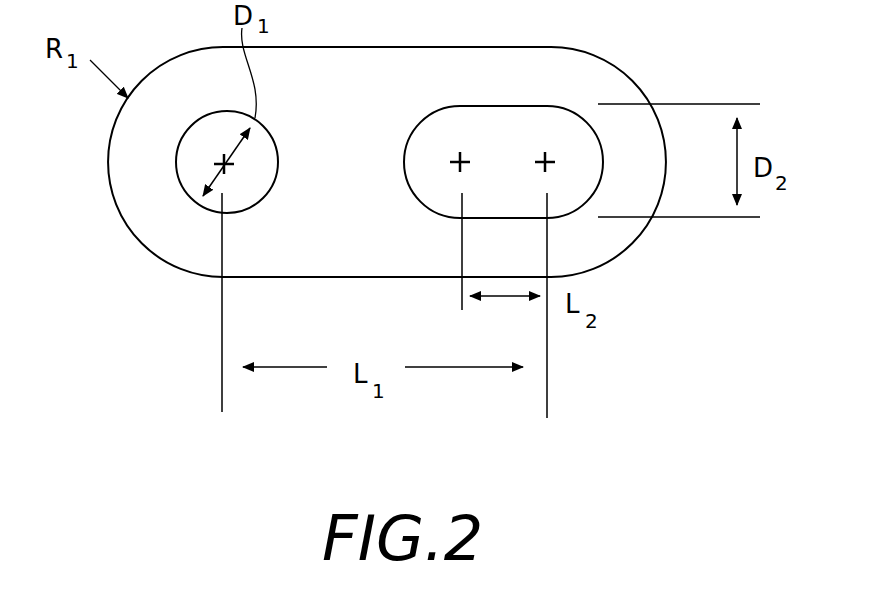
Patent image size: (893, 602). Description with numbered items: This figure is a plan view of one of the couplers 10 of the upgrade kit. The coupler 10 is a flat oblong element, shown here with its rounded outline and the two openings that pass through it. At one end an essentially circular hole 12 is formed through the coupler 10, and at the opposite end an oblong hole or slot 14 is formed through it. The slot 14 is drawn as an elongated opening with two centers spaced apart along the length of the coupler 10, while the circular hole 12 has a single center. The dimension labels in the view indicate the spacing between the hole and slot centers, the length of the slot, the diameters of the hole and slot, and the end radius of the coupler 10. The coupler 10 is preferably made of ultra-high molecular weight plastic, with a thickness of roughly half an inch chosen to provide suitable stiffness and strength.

The coupler 10 is at (325, 47).
The circular hole 12 is at (183, 193).
The oblong hole or slot 14 is at (508, 106).